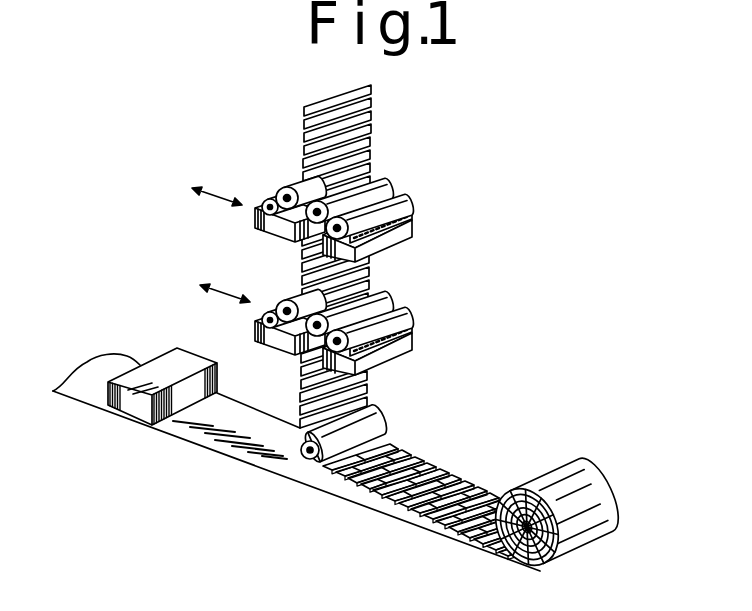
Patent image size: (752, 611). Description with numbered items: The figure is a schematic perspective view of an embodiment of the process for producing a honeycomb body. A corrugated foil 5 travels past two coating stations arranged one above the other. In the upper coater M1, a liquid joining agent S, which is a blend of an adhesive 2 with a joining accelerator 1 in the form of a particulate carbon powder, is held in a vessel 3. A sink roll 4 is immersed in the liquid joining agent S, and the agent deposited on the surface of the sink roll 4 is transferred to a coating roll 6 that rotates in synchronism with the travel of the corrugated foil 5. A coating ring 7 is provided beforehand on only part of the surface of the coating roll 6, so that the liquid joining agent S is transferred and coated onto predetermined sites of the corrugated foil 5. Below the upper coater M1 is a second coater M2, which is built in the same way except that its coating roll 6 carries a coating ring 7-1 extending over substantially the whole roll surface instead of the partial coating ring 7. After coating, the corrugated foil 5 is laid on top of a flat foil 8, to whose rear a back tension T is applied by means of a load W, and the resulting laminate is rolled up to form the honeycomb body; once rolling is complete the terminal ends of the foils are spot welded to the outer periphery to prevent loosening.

The joining accelerator 1 is at (405, 265).
The adhesive 2 is at (408, 228).
The vessel 3 is at (410, 242).
The sink roll 4 is at (393, 203).
The corrugated foil 5 is at (375, 96).
The coating roll 6 is at (374, 182).
The coating ring 7 is at (312, 182).
The coating ring 7-1 is at (381, 288).
The flat foil 8 is at (260, 426).
The liquid joining agent S is at (407, 215).
The load W is at (164, 370).
The back tension T is at (177, 452).
The upper coater M1 is at (237, 227).
The coater M2 is at (247, 333).